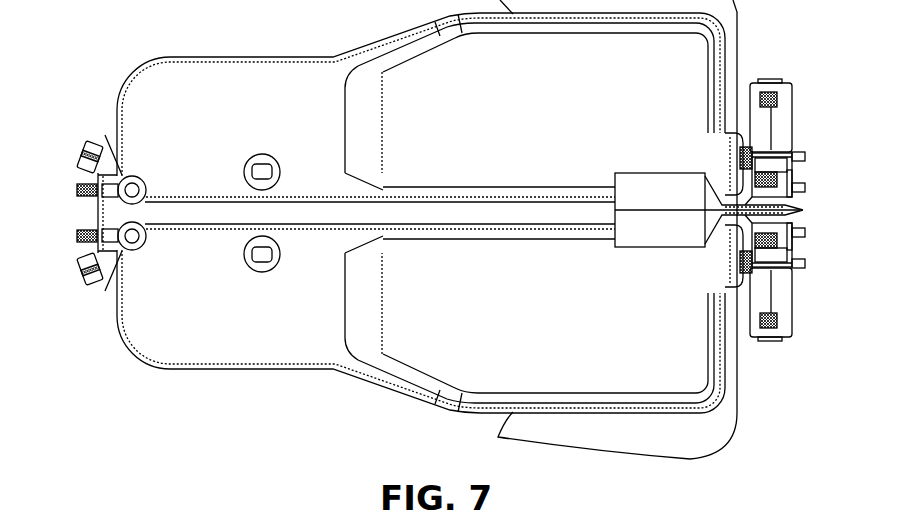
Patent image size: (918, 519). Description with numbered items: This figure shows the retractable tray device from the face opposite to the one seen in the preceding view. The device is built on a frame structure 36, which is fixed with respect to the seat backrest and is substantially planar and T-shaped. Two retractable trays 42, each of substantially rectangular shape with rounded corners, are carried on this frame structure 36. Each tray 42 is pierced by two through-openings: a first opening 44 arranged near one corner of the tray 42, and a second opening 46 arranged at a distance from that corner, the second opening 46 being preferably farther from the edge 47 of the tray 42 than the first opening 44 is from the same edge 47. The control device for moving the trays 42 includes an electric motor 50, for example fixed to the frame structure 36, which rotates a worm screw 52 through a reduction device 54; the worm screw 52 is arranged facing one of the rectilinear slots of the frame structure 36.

The frame structure 36 is at (685, 443).
The retractable tray 42 is at (165, 342).
The first opening 44 is at (128, 186).
The second opening 46 is at (258, 163).
The edge 47 is at (343, 220).
The electric motor 50 is at (780, 303).
The worm screw 52 is at (77, 237).
The reduction device 54 is at (780, 258).